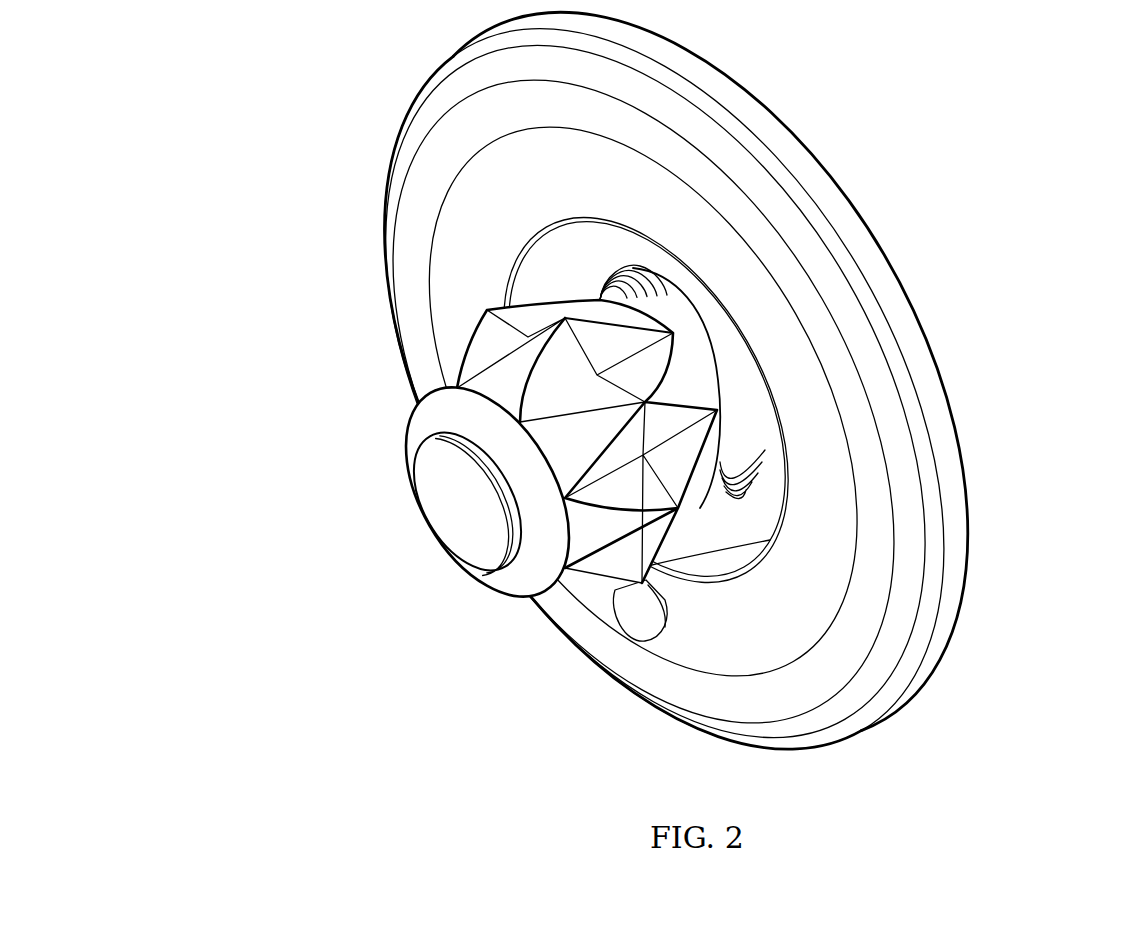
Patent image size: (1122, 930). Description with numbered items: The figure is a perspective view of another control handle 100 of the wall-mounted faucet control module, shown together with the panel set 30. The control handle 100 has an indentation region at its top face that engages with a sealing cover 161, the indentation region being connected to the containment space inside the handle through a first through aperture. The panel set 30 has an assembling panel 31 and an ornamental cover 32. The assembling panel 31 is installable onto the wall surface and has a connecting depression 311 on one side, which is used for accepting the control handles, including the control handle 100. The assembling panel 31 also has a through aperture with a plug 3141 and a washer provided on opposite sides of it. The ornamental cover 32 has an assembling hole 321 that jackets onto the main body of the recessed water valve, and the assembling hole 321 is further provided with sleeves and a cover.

The panel set 30 is at (968, 545).
The assembling panel 31 is at (897, 628).
The connecting depression 311 is at (537, 254).
The ornamental cover 32 is at (563, 285).
The assembling hole 321 is at (683, 316).
The plug 3141 is at (648, 625).
The control handle 100 is at (513, 386).
The sealing cover 161 is at (458, 502).